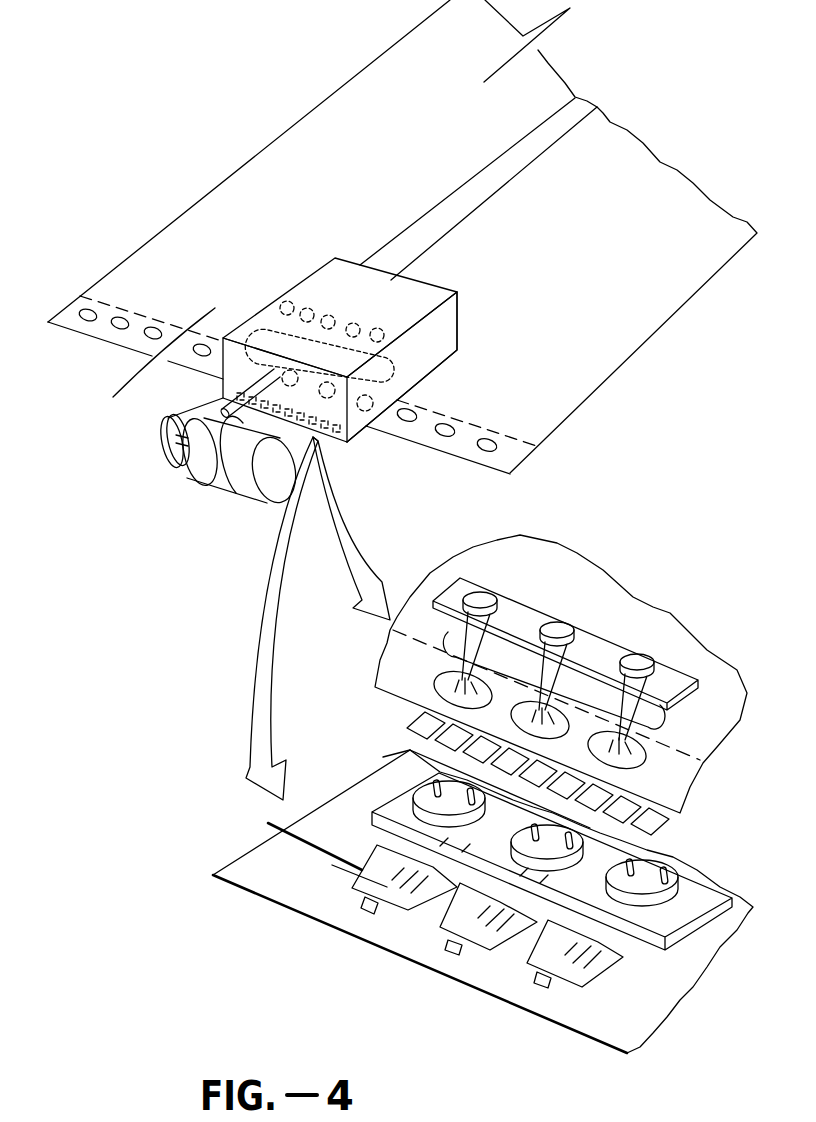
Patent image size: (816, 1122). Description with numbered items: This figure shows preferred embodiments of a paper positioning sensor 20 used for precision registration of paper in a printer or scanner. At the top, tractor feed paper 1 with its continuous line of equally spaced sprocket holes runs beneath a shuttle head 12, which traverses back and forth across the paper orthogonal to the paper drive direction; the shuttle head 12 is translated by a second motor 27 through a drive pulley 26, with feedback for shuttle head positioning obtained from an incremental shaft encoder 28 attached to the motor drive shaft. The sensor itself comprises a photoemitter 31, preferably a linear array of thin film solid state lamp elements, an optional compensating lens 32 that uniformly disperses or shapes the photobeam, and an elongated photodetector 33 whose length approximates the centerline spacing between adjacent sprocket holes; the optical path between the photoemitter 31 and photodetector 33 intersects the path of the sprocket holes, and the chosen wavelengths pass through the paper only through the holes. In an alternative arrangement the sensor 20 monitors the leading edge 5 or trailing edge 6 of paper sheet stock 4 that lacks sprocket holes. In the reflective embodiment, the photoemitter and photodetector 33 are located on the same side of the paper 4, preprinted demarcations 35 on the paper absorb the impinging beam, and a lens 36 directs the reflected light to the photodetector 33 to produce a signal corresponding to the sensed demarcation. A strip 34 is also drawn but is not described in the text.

The tractor feed paper 1 is at (348, 119).
The paper sheet stock 4 is at (265, 858).
The leading edge 5 is at (157, 232).
The trailing edge 6 is at (603, 383).
The shuttle head 12 is at (452, 332).
The paper positioning sensor 20 is at (252, 314).
The drive pulley 26 is at (157, 451).
The second motor 27 is at (202, 477).
The incremental shaft encoder 28 is at (245, 490).
The photoemitter 31 is at (383, 333).
The compensating lens 32 is at (390, 630).
The photodetector 33 is at (417, 783).
The strip 34 is at (274, 821).
The demarcations 35 is at (365, 903).
The lens 36 is at (400, 898).